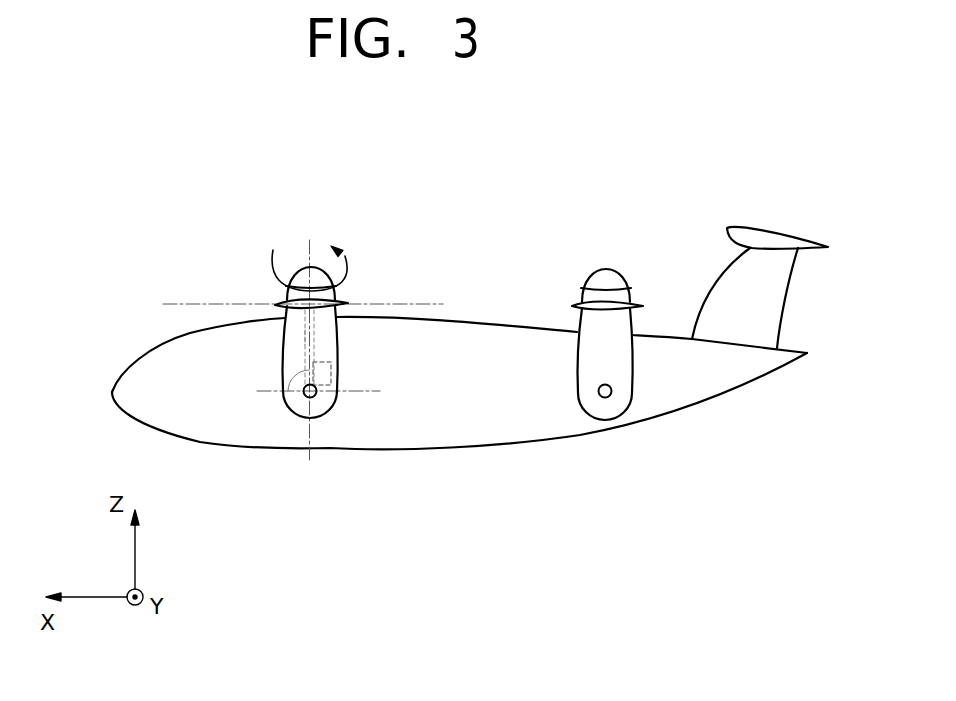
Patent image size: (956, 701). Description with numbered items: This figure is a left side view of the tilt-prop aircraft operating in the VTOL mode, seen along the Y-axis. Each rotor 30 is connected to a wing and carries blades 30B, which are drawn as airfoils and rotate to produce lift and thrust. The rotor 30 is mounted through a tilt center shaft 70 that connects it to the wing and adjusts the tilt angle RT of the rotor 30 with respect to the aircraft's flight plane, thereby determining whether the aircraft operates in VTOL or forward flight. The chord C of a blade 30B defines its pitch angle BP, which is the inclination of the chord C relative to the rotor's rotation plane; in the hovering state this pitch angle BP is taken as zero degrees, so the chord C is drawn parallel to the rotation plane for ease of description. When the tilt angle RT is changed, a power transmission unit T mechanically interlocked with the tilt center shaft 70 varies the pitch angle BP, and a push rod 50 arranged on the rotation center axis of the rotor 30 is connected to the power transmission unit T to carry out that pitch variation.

The rotor 30 is at (304, 274).
The blade 30B is at (286, 293).
The chord C is at (337, 292).
The pitch angle BP is at (441, 288).
The tilt angle RT is at (293, 375).
The push rod 50 is at (311, 347).
The power transmission unit T is at (327, 378).
The tilt center shaft 70 is at (312, 396).